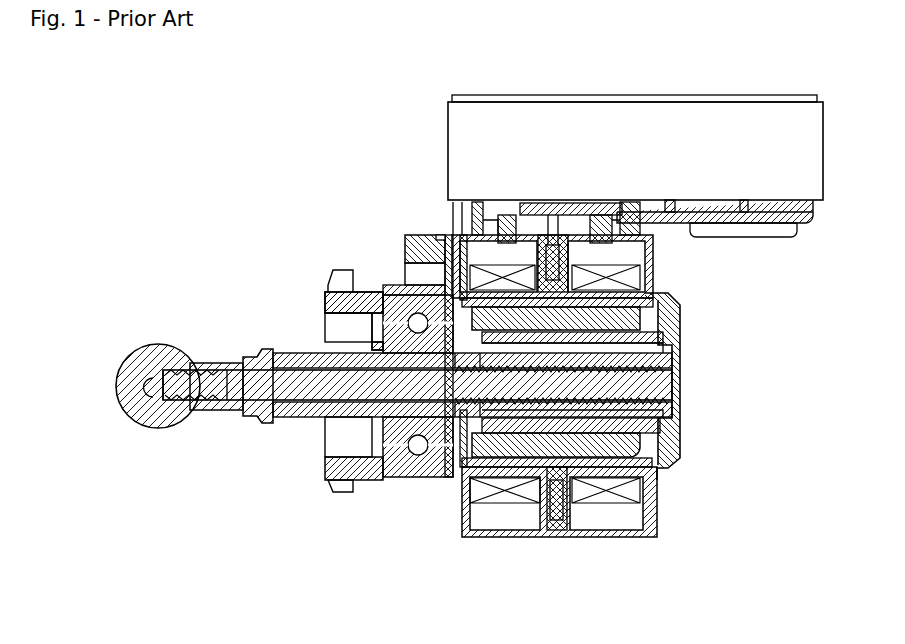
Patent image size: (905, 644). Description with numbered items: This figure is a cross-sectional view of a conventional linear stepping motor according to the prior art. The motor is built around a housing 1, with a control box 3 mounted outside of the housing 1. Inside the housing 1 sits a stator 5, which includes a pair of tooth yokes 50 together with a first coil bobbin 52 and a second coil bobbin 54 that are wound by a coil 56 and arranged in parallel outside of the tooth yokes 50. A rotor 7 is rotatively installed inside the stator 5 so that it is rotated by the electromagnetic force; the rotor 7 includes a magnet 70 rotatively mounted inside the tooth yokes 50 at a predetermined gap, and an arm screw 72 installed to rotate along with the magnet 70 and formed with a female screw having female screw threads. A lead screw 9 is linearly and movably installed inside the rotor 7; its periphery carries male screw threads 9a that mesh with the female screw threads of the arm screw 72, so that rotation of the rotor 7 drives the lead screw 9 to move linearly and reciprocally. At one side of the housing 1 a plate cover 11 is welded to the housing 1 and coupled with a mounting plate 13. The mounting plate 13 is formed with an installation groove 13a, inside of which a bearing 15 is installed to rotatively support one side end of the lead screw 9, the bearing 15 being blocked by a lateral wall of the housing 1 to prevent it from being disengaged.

The housing 1 is at (497, 535).
The control box 3 is at (538, 122).
The stator 5 is at (555, 429).
The rotor 7 is at (617, 378).
The lead screw 9 is at (459, 406).
The male screw threads 9a is at (615, 397).
The plate cover 11 is at (443, 238).
The mounting plate 13 is at (363, 300).
The installation groove 13a is at (398, 300).
The bearing 15 is at (402, 462).
The tooth yokes 50 is at (556, 532).
The first coil bobbin 52 is at (508, 478).
The second coil bobbin 54 is at (612, 478).
The coil 56 is at (467, 530).
The magnet 70 is at (613, 318).
The arm screw 72 is at (618, 358).